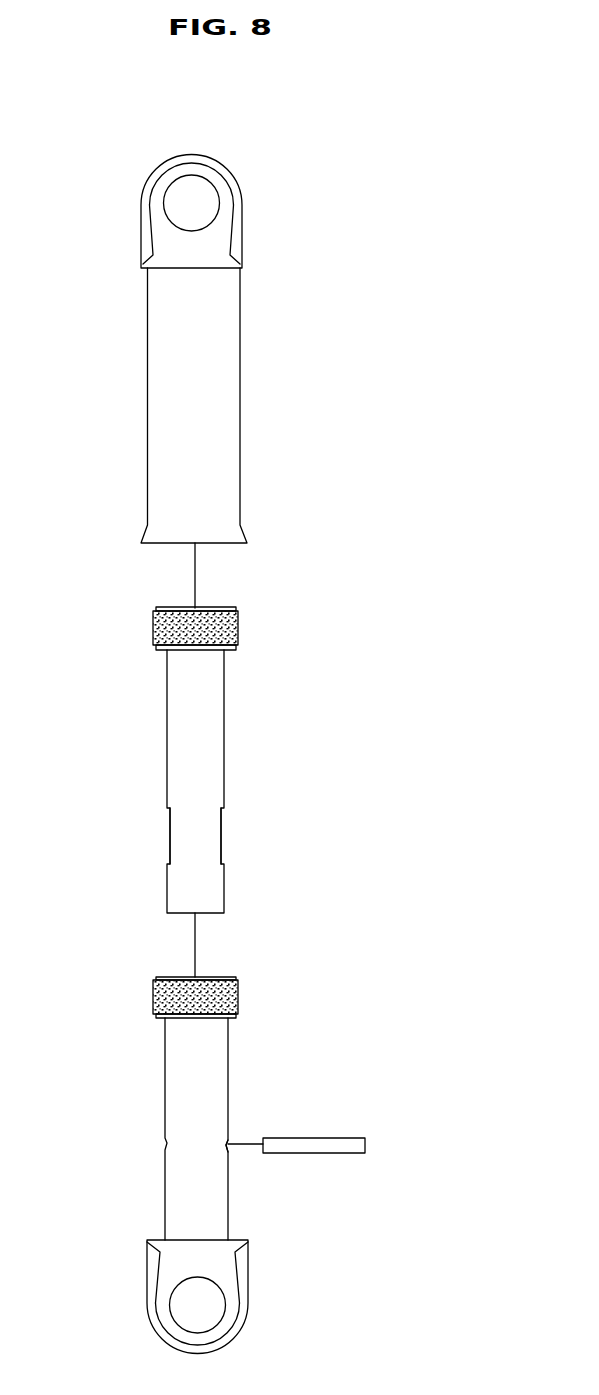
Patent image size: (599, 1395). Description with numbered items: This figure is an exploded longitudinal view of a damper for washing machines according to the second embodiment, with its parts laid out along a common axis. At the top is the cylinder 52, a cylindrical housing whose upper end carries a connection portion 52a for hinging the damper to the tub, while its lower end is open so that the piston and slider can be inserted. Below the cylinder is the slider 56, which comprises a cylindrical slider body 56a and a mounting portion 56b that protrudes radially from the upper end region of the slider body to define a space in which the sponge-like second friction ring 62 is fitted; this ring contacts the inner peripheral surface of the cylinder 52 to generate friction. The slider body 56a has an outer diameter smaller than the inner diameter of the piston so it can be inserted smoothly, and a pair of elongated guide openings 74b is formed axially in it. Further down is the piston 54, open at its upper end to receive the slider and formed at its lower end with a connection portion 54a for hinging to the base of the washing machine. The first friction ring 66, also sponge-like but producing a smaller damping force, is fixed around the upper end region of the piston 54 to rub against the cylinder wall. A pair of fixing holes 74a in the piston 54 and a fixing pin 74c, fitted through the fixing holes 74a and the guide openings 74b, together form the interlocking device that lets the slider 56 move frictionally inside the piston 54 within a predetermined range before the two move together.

The cylinder 52 is at (130, 345).
The connection portion 52a is at (223, 243).
The piston 54 is at (147, 1082).
The connection portion 54a is at (230, 1272).
The slider 56 is at (200, 813).
The slider body 56a is at (218, 707).
The mounting portion 56b is at (238, 610).
The second friction ring 62 is at (157, 630).
The first friction ring 66 is at (160, 995).
The fixing holes 74a is at (229, 1150).
The elongated guide openings 74b is at (222, 838).
The fixing pin 74c is at (365, 1144).